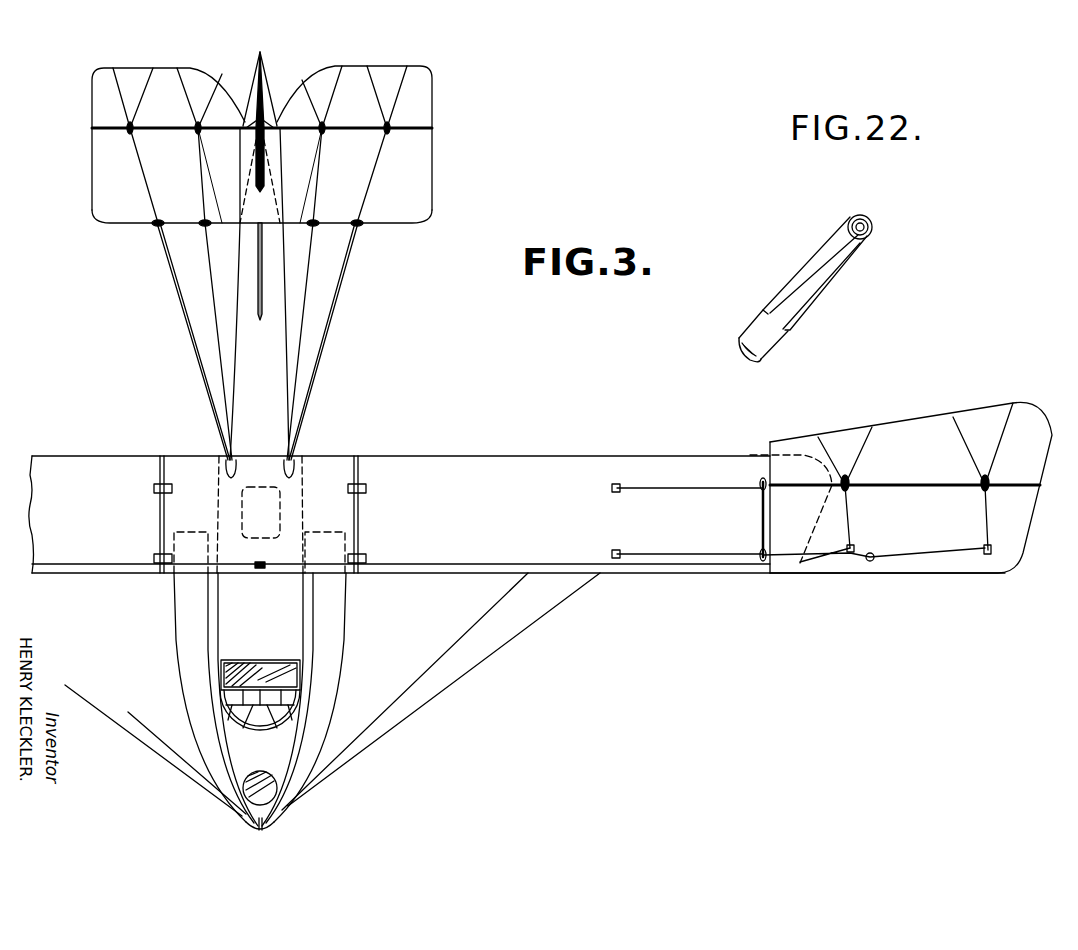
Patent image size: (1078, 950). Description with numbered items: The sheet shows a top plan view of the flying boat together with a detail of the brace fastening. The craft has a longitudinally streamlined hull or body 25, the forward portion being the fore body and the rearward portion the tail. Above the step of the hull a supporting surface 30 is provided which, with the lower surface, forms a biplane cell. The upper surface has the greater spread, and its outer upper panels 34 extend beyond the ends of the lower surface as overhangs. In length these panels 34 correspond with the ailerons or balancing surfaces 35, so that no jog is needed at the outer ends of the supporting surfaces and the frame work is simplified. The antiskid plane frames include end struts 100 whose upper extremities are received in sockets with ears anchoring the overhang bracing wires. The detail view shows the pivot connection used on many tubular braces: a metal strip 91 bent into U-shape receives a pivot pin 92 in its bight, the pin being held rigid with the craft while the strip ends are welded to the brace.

In FIG. 3, the hull or body 25 is at (302, 438).
In FIG. 3, the supporting surface 30 is at (500, 449).
In FIG. 3, the outer upper panel 34 is at (308, 514).
In FIG. 3, the aileron 35 is at (901, 487).
In FIG. 3, the end strut 100 is at (760, 557).
In FIG. 22, the metal strip 91 is at (832, 283).
In FIG. 22, the pivot pin 92 is at (873, 229).